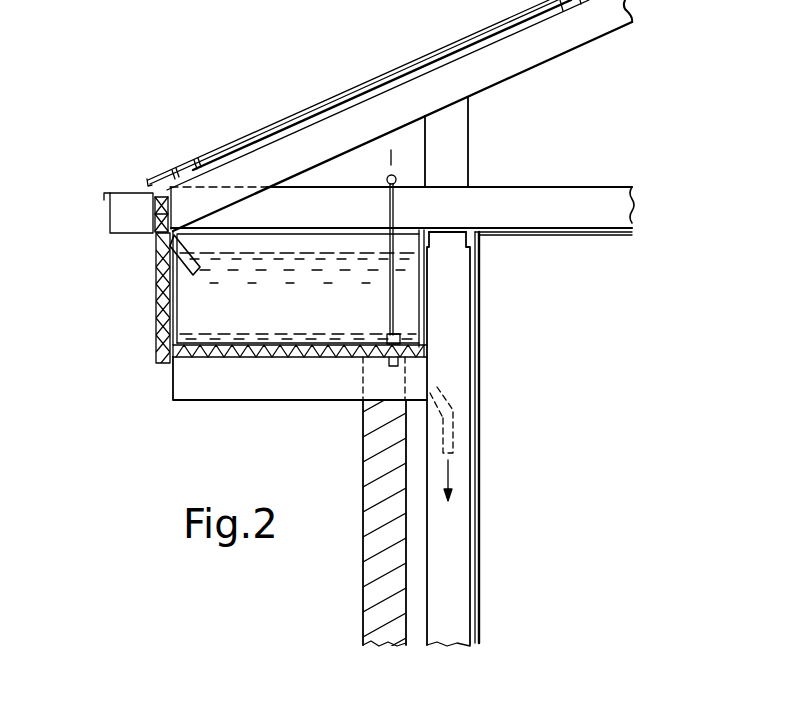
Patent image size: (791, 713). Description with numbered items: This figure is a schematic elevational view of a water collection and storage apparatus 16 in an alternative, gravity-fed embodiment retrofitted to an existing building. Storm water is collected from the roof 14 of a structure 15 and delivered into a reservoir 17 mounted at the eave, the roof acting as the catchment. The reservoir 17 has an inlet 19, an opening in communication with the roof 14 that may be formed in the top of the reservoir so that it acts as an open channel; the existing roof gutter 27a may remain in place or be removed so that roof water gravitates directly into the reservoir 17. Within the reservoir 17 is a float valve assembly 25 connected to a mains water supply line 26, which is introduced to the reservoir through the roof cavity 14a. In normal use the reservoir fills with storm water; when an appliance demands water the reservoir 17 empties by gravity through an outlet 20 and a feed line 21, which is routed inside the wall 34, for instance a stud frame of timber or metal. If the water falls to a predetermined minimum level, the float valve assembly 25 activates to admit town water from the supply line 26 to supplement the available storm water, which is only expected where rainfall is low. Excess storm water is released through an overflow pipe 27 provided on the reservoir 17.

The roof 14 is at (318, 104).
The roof cavity 14a is at (391, 160).
The structure 15 is at (192, 120).
The apparatus 16 is at (443, 275).
The reservoir 17 is at (190, 312).
The inlet 19 is at (163, 282).
The outlet 20 is at (428, 389).
The feed line 21 is at (455, 427).
The float valve assembly 25 is at (393, 308).
The mains water supply line 26 is at (397, 177).
The overflow pipe 27 is at (303, 255).
The roof gutter 27a is at (120, 212).
The wall 34 is at (460, 530).